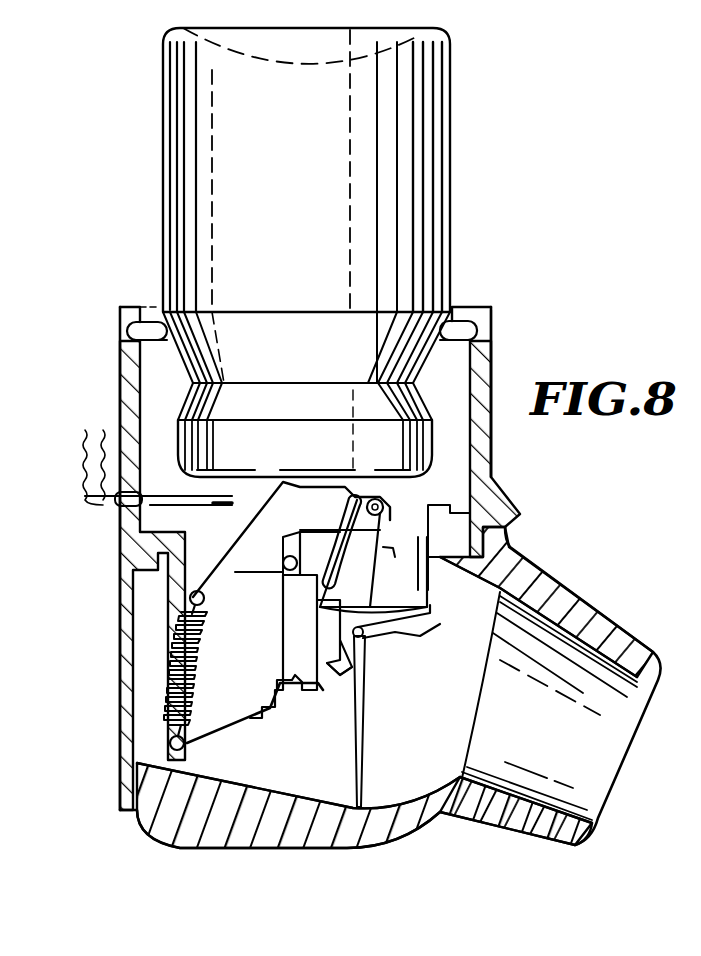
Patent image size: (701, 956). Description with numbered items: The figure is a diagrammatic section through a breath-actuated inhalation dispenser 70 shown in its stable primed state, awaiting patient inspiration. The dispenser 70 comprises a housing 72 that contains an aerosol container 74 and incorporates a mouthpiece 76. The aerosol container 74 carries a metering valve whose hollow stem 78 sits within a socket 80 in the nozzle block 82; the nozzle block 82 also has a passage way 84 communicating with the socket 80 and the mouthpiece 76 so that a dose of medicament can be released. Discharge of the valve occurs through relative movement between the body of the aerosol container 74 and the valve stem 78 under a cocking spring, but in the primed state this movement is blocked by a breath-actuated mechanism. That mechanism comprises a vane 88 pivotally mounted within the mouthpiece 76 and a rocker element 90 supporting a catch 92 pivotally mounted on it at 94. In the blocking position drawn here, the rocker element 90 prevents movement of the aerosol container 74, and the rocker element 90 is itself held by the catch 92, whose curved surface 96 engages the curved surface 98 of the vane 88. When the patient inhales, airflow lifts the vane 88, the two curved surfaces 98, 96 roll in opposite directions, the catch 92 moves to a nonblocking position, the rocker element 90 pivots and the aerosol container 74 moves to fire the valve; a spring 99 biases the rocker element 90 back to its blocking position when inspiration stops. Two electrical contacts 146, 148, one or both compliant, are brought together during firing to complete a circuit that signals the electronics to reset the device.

The dispenser 70 is at (503, 309).
The housing 72 is at (477, 360).
The aerosol container 74 is at (428, 102).
The mouthpiece 76 is at (617, 647).
The hollow stem 78 is at (282, 593).
The socket 80 is at (285, 625).
The nozzle block 82 is at (286, 700).
The passage way 84 is at (333, 660).
The vane 88 is at (367, 742).
The rocker element 90 is at (270, 513).
The catch 92 is at (363, 538).
The pivot of catch 94 is at (367, 500).
The curved surface of catch 96 is at (364, 556).
The curved surface of vane 98 is at (382, 638).
The spring 99 is at (173, 683).
The electrical contact 146 is at (130, 527).
The electrical contact 148 is at (163, 490).